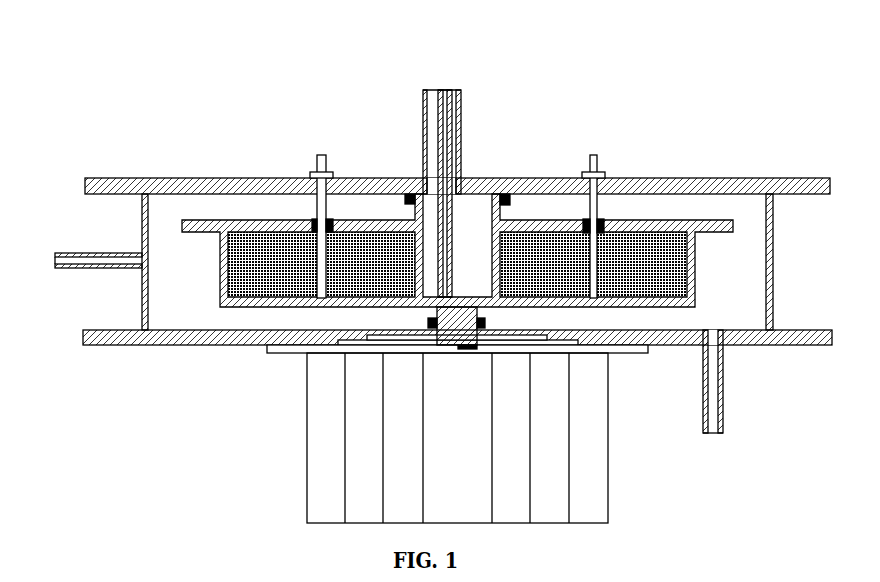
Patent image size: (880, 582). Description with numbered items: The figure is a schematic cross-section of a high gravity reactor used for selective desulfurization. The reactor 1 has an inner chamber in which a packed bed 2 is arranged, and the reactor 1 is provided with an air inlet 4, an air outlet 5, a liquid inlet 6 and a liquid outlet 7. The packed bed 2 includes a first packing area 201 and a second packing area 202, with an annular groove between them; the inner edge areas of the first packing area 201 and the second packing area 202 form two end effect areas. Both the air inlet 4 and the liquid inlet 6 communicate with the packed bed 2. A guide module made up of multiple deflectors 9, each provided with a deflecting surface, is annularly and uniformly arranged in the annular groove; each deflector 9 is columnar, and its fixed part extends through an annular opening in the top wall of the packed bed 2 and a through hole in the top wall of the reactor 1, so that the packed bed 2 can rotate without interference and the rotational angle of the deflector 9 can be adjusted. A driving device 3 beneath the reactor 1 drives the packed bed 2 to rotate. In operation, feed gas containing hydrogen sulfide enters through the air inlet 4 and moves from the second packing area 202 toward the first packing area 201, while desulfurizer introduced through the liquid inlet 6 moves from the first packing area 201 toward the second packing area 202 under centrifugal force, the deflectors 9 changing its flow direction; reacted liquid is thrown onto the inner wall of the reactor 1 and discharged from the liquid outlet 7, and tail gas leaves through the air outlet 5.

The reactor 1 is at (195, 178).
The packed bed 2 is at (526, 224).
The first packing area 201 is at (381, 245).
The second packing area 202 is at (655, 230).
The driving device 3 is at (307, 437).
The air inlet 4 is at (123, 258).
The air outlet 5 is at (432, 98).
The liquid inlet 6 is at (453, 110).
The liquid outlet 7 is at (718, 427).
The deflector 9 is at (318, 247).